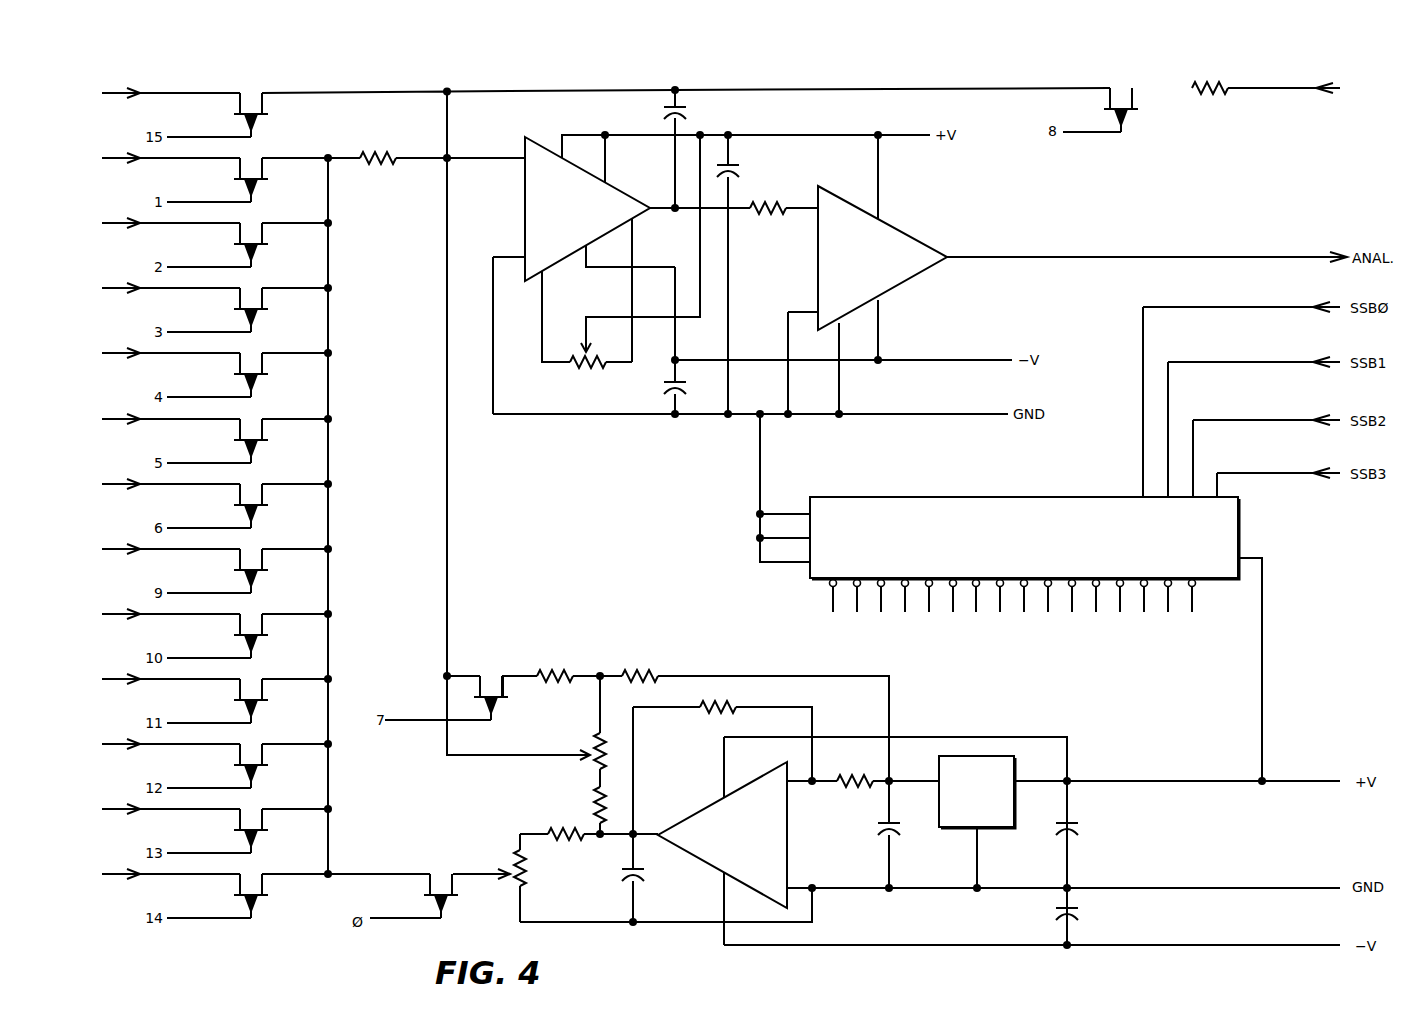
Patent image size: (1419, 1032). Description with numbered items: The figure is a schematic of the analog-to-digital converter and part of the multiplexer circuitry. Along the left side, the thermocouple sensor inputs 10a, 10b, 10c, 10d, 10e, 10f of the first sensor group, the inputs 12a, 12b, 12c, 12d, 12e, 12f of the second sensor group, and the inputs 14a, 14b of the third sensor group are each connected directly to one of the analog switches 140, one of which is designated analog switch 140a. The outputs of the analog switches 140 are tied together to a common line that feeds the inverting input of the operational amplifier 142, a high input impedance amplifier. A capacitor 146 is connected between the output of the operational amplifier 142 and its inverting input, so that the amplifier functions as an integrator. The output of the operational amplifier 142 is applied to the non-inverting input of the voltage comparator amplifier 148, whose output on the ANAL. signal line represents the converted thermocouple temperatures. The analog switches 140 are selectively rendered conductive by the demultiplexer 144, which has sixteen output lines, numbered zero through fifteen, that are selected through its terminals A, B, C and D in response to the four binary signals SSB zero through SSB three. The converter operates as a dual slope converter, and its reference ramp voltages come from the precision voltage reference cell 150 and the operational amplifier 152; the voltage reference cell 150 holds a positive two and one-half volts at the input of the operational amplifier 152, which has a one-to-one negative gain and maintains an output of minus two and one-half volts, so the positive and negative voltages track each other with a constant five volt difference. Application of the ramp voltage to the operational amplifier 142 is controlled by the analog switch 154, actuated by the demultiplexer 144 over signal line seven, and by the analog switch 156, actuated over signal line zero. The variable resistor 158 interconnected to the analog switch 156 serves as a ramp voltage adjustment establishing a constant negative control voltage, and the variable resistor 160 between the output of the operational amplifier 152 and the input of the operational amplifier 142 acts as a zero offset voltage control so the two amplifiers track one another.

The thermocouple sensor input 10a is at (108, 158).
The thermocouple sensor input 10b is at (108, 223).
The thermocouple sensor input 10c is at (108, 288).
The thermocouple sensor input 10d is at (108, 353).
The thermocouple sensor input 10e is at (108, 419).
The thermocouple sensor input 10f is at (108, 484).
The thermocouple sensor input 12a is at (108, 549).
The thermocouple sensor input 12b is at (108, 614).
The thermocouple sensor input 12c is at (108, 679).
The thermocouple sensor input 12d is at (108, 744).
The thermocouple sensor input 12e is at (108, 809).
The thermocouple sensor input 12f is at (108, 874).
The thermocouple sensor input 14a is at (108, 93).
The thermocouple sensor input 14b is at (1340, 86).
The analog switch 140 is at (268, 108).
The analog switch 140a is at (264, 180).
The operational amplifier 142 is at (547, 183).
The demultiplexer 144 is at (907, 512).
The capacitor 146 is at (700, 116).
The voltage comparator amplifier 148 is at (905, 250).
The voltage reference cell 150 is at (995, 830).
The operational amplifier 152 is at (745, 818).
The analog switch 154 is at (490, 693).
The analog switch 156 is at (441, 893).
The variable resistor 158 is at (527, 878).
The variable resistor 160 is at (590, 762).